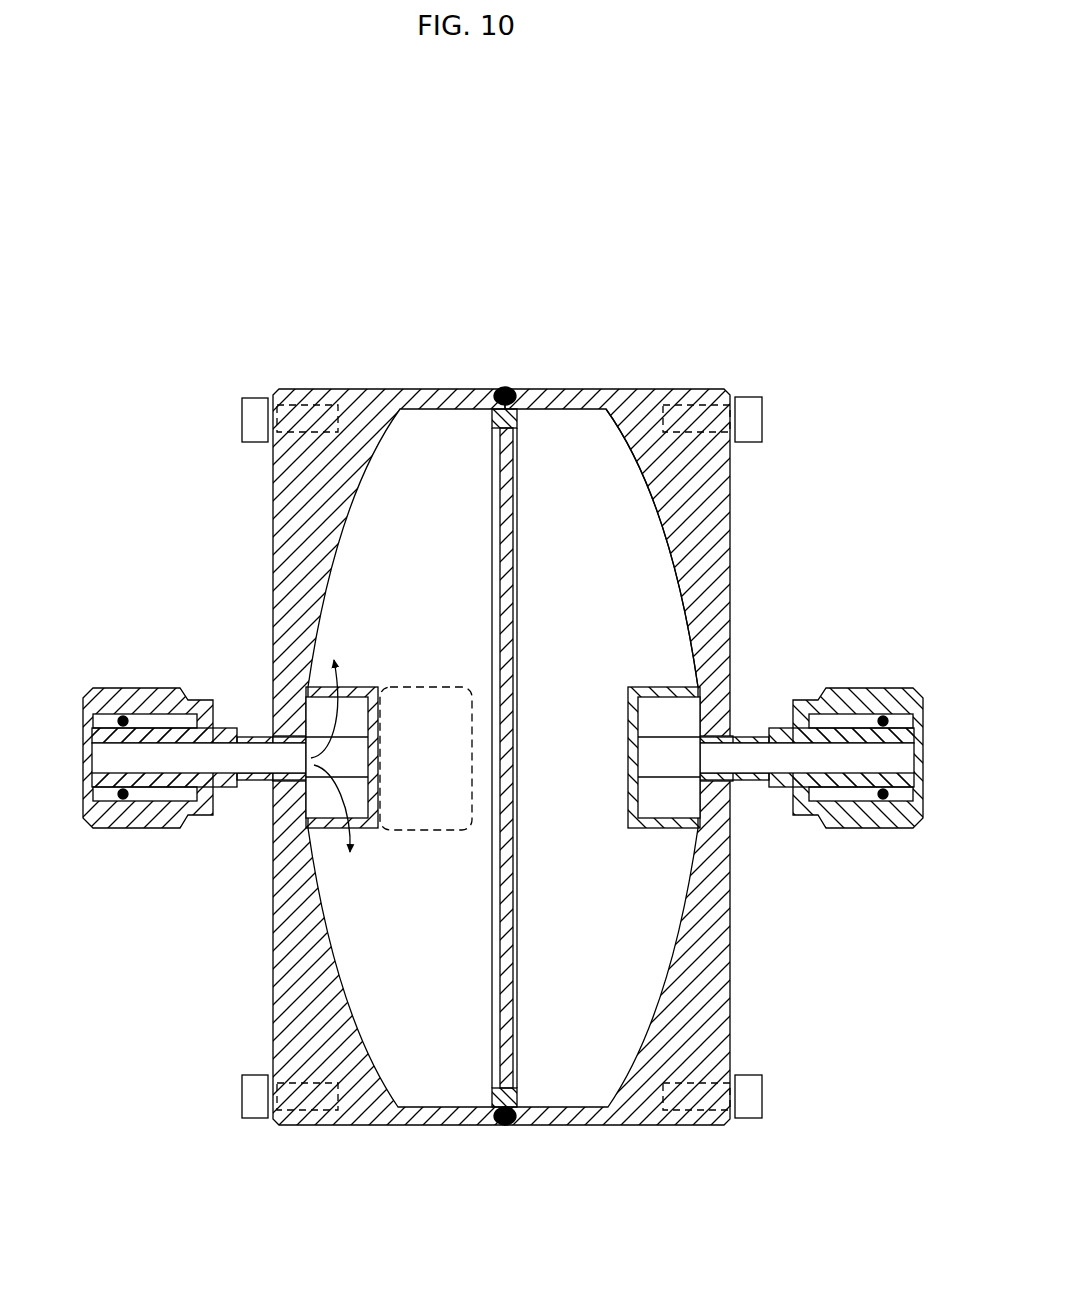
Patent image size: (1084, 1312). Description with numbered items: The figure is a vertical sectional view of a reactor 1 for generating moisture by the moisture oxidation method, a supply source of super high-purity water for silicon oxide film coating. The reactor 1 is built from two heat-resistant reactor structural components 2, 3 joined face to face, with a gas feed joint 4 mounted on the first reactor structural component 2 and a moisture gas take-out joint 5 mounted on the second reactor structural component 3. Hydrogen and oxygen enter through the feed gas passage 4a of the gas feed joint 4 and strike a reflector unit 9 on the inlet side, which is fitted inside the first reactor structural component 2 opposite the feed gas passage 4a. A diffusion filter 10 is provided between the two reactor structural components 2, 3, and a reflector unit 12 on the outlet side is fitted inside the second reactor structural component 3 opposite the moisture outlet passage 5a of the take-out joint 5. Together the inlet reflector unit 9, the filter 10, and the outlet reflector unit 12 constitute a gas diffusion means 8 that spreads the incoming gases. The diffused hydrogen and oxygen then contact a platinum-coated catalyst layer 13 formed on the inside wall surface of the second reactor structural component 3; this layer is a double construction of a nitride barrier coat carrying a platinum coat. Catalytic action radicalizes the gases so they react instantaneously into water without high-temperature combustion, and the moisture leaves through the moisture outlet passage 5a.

The reactor 1 is at (718, 318).
The first reactor structural component 2 is at (292, 517).
The second reactor structural component 3 is at (710, 500).
The gas feed joint 4 is at (100, 688).
The feed gas passage 4a is at (235, 760).
The moisture gas take-out joint 5 is at (885, 688).
The moisture outlet passage 5a is at (762, 762).
The gas diffusion means 8 is at (446, 840).
The reflector unit on the inlet side 9 is at (382, 771).
The diffusion filter 10 is at (505, 866).
The reflector unit on the outlet side 12 is at (626, 756).
The platinum-coated catalyst layer 13 is at (680, 558).